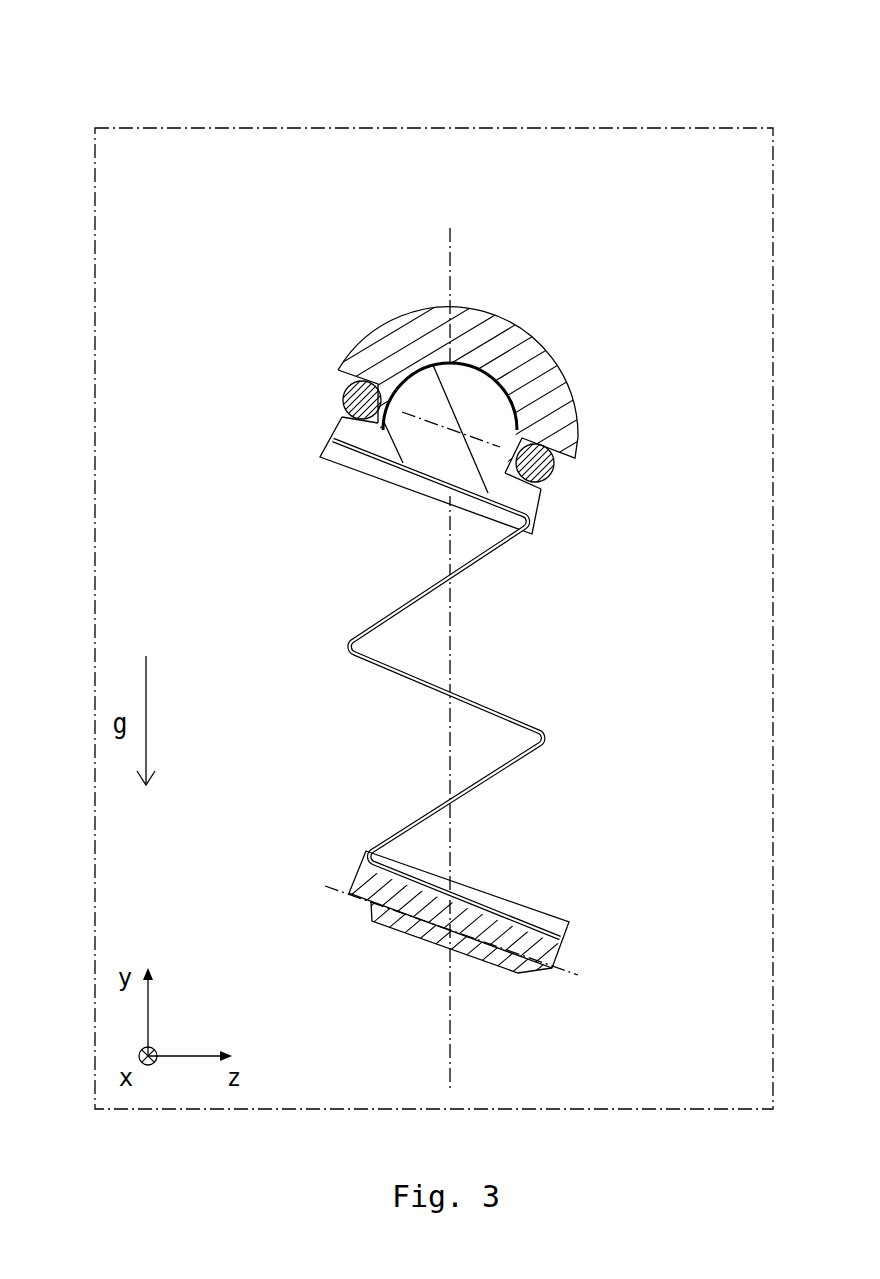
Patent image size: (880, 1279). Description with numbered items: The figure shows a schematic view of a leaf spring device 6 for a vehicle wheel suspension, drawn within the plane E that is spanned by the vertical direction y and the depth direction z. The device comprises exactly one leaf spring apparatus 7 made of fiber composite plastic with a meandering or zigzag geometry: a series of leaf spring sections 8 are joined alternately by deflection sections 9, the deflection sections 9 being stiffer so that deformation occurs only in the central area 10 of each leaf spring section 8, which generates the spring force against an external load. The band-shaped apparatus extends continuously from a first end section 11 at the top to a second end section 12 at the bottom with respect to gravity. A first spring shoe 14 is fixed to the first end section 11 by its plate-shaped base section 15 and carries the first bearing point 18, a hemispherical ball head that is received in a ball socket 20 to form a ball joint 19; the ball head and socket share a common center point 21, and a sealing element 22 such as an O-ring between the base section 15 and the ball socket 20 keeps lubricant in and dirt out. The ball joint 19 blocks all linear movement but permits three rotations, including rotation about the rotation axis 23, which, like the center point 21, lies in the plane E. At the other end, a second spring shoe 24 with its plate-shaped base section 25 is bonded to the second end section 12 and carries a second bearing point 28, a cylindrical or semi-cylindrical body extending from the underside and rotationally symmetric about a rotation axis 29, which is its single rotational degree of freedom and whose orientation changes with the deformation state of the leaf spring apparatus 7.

The plane E is at (167, 128).
The leaf spring device 6 is at (437, 87).
The leaf spring apparatus 7 is at (522, 774).
The leaf spring section 8 is at (485, 706).
The deflection section 9 is at (342, 648).
The central area 10 is at (344, 660).
The first end section 11 is at (390, 467).
The second end section 12 is at (532, 910).
The first spring shoe 14 is at (545, 505).
The base section 15 is at (338, 422).
The first bearing point 18 is at (404, 488).
The ball joint 19 is at (385, 187).
The ball socket 20 is at (417, 307).
The center point 21 is at (453, 415).
The sealing element 22 is at (343, 398).
The rotation axis 23 is at (450, 1063).
The second spring shoe 24 is at (567, 946).
The base section 25 is at (345, 882).
The second bearing point 28 is at (440, 945).
The rotation axis 29 is at (325, 890).